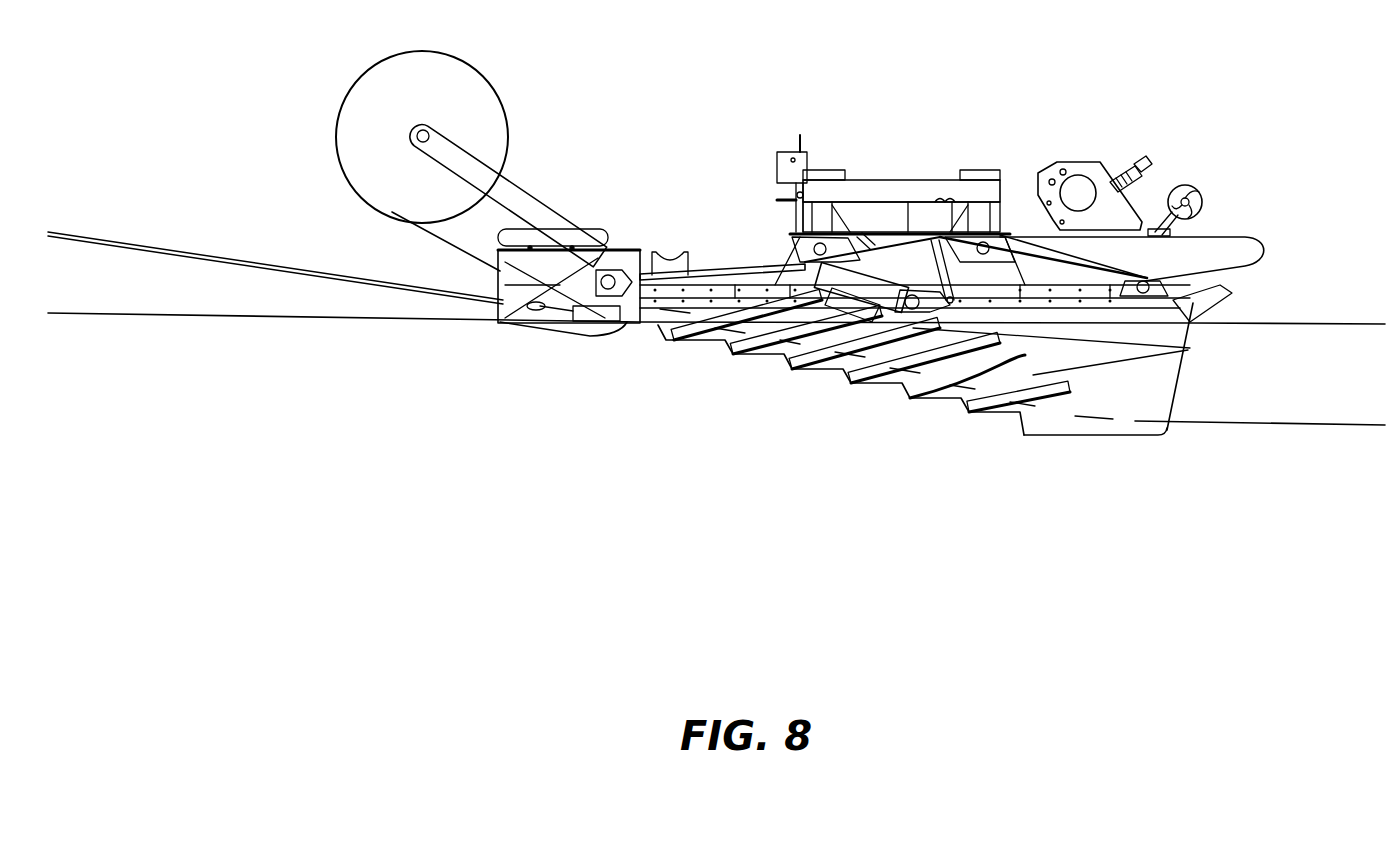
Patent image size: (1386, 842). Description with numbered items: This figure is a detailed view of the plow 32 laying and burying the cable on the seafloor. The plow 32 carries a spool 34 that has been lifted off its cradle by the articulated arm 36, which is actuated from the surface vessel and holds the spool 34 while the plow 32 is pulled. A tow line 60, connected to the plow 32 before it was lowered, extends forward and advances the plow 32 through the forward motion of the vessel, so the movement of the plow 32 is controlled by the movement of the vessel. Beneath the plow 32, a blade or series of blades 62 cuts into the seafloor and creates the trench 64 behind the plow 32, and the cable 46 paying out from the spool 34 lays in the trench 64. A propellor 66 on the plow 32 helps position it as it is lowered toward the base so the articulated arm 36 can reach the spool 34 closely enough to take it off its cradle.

The plow 32 is at (905, 160).
The spool 34 is at (452, 62).
The articulated arm 36 is at (530, 197).
The cable 46 is at (456, 246).
The tow line 60 is at (158, 243).
The blades 62 is at (855, 396).
The trench 64 is at (1297, 371).
The propellor 66 is at (1197, 193).